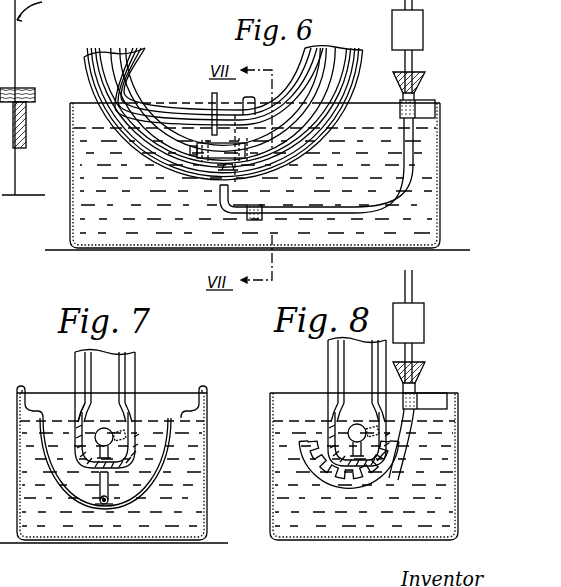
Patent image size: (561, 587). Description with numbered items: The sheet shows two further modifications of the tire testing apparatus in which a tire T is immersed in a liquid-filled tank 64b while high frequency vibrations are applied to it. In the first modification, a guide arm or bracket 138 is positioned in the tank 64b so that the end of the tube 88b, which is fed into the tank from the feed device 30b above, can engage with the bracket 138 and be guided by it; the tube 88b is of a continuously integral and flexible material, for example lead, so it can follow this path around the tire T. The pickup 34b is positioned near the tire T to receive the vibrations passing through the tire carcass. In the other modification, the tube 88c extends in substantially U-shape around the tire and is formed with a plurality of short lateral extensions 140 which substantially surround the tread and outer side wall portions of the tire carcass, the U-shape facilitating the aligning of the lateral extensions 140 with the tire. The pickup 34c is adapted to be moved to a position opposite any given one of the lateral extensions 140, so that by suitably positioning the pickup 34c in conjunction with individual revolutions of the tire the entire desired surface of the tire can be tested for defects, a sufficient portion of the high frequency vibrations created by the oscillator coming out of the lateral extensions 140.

In FIG. 6, the feed device 30b is at (423, 25).
In FIG. 6, the tire 34b is at (189, 140).
In FIG. 7, the tire 34b is at (76, 442).
In FIG. 8, the pickup 34c is at (330, 440).
In FIG. 6, the tank 64b is at (440, 176).
In FIG. 7, the tank 64b is at (207, 449).
In FIG. 6, the tube 88b is at (362, 213).
In FIG. 7, the tube 88b is at (110, 483).
In FIG. 8, the tube 88c is at (412, 446).
In FIG. 6, the guide arm or bracket 138 is at (268, 198).
In FIG. 7, the guide arm or bracket 138 is at (155, 490).
In FIG. 8, the lateral extensions 140 is at (366, 478).
In FIG. 7, the tire T is at (135, 363).